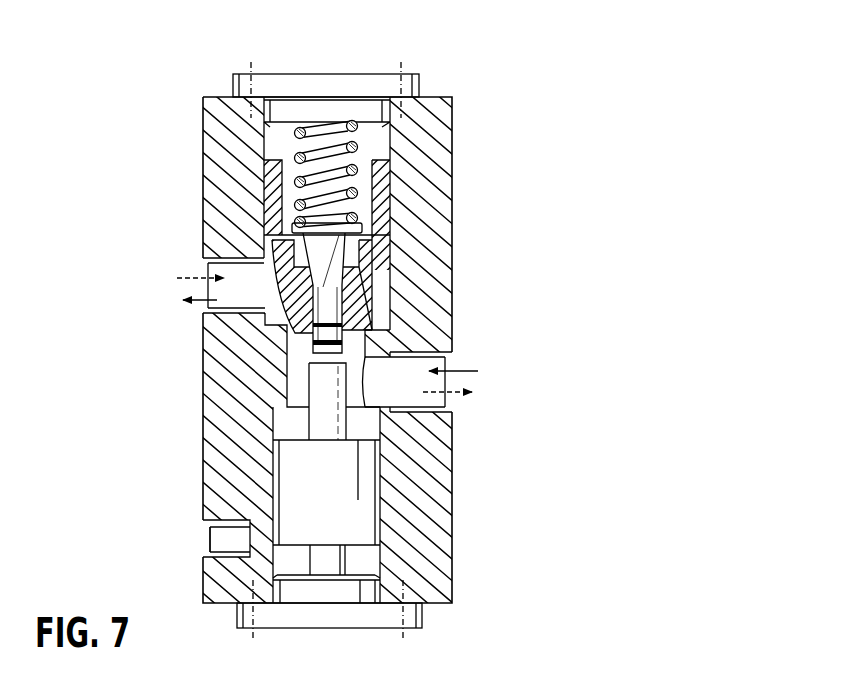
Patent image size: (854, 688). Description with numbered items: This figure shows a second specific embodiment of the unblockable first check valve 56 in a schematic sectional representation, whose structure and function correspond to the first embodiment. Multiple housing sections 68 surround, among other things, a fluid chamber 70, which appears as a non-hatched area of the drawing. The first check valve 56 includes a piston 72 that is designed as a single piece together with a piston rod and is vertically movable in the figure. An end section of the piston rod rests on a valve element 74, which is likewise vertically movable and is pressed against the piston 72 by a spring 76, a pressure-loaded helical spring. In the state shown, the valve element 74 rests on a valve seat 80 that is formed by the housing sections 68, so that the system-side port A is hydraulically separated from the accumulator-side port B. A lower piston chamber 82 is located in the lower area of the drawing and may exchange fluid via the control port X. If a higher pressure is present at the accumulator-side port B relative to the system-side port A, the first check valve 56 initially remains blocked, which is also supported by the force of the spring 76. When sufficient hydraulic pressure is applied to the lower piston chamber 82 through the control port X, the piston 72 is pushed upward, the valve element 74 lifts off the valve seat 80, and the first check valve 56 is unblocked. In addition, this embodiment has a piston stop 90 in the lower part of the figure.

The first check valve 56 is at (453, 82).
The housing sections 68 is at (230, 167).
The fluid chamber 70 is at (287, 422).
The piston 72 is at (300, 495).
The valve element 74 is at (327, 268).
The spring 76 is at (358, 152).
The valve seat 80 is at (279, 338).
The lower piston chamber 82 is at (327, 320).
The piston stop 90 is at (328, 560).
The system-side port A is at (437, 382).
The accumulator-side port B is at (220, 288).
The control port X is at (222, 540).